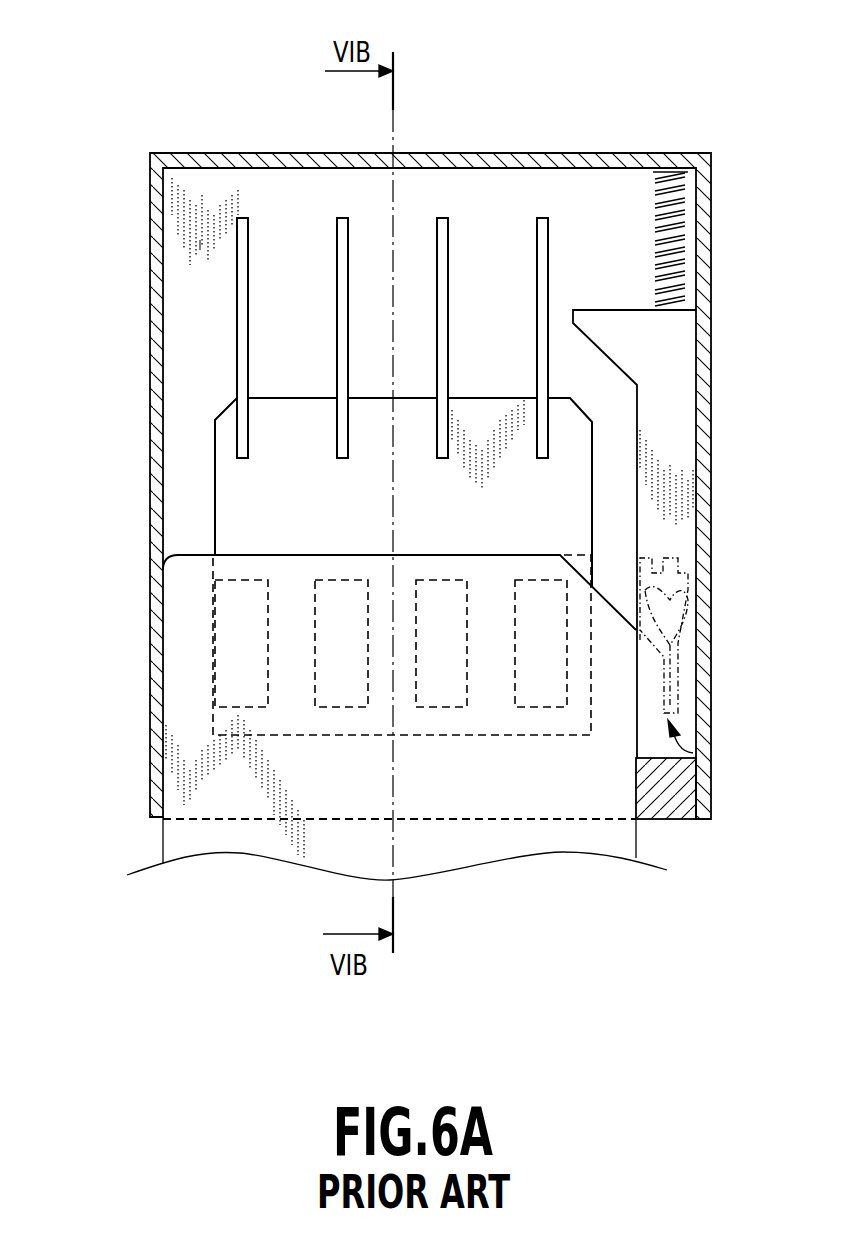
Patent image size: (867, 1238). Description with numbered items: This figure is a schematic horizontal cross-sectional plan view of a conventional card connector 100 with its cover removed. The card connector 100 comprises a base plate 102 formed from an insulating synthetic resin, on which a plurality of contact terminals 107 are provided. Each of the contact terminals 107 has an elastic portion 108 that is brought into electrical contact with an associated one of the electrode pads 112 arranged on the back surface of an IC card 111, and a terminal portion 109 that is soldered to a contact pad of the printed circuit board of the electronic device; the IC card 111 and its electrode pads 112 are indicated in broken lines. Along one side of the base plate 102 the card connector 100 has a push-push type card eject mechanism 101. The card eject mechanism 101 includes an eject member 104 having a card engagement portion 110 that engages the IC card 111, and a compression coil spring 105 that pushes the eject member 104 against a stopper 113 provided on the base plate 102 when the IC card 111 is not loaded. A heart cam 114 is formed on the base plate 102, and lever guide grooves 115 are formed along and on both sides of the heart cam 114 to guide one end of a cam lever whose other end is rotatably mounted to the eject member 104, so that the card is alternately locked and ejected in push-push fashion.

The card connector 100 is at (266, 137).
The card eject mechanism 101 is at (693, 753).
The base plate 102 is at (205, 187).
The eject member 104 is at (675, 410).
The compression coil spring 105 is at (678, 176).
The contact terminals 107 is at (343, 370).
The elastic portion 108 is at (242, 247).
The terminal portion 109 is at (343, 460).
The card engagement portion 110 is at (595, 320).
The IC card 111 is at (180, 843).
The electrode pads 112 is at (343, 633).
The stopper 113 is at (663, 798).
The heart cam 114 is at (645, 600).
The lever guide grooves 115 is at (677, 640).